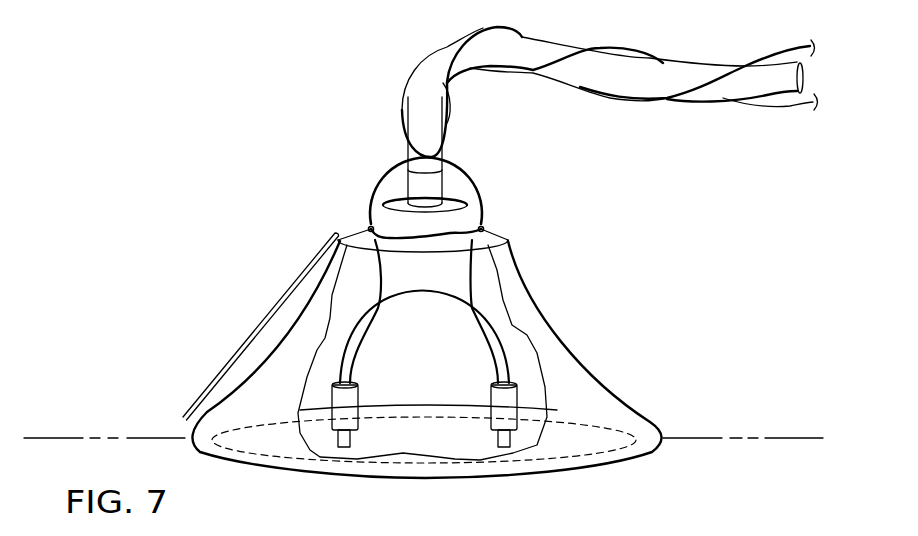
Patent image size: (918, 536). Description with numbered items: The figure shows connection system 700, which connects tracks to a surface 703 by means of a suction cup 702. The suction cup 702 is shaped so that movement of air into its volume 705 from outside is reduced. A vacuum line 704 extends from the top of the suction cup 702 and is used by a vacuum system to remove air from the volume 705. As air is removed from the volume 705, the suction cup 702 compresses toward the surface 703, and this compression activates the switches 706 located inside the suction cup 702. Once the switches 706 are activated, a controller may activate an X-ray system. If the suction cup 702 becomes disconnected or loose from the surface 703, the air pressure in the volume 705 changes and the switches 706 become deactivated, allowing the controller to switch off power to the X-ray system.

The connection system 700 is at (291, 117).
The suction cup 702 is at (550, 323).
The surface 703 is at (793, 437).
The vacuum line 704 is at (697, 65).
The volume 705 is at (260, 326).
The switches 706 is at (337, 448).